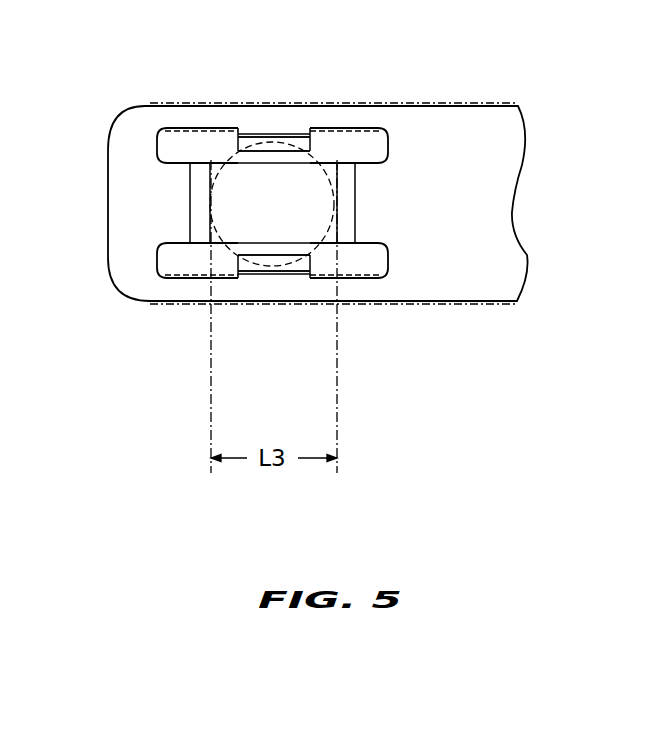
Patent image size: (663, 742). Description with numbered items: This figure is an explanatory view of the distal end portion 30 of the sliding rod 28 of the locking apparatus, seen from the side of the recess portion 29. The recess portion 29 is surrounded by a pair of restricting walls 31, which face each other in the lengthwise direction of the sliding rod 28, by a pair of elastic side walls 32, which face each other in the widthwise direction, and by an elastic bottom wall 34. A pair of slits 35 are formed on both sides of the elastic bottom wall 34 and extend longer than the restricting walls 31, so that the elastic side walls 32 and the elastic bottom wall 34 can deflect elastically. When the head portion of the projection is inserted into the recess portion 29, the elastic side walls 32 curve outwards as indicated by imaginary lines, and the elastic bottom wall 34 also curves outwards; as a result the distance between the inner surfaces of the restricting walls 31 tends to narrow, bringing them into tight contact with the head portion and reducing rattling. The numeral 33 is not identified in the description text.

The sliding rod 28 is at (480, 100).
The recess portion 29 is at (305, 207).
The distal end portion 30 is at (137, 127).
The restricting wall 31 is at (190, 175).
The elastic side wall 32 is at (295, 118).
The holding portion 33 is at (268, 148).
The elastic bottom wall 34 is at (271, 208).
The slit 35 is at (203, 140).